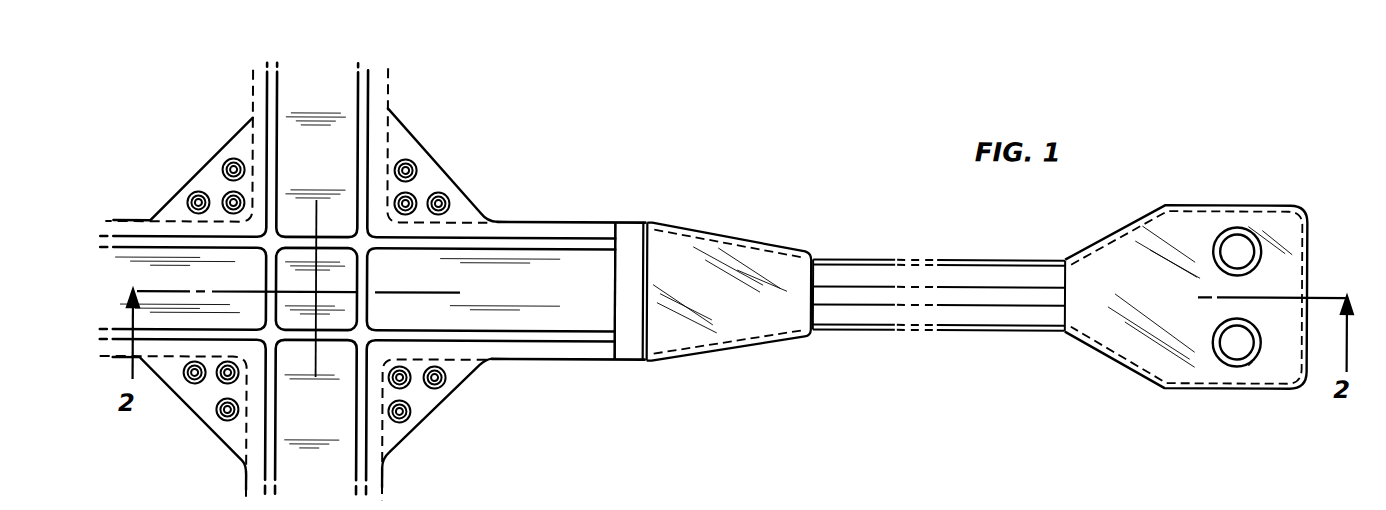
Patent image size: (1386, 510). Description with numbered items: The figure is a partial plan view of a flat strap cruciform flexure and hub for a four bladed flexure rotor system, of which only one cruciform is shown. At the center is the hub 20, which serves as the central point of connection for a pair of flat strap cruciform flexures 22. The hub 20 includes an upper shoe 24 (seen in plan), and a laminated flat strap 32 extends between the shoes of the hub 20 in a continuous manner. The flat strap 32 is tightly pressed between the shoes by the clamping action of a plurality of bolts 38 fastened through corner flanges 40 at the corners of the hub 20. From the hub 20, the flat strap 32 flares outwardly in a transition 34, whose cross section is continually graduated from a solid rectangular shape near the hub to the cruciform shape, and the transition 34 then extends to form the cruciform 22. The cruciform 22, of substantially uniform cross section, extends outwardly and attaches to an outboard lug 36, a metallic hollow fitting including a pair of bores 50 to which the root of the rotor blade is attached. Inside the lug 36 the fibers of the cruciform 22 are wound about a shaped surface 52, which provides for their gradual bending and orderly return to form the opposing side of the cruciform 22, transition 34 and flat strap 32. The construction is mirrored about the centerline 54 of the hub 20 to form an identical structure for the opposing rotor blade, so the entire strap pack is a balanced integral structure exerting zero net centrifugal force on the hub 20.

The hub 20 is at (516, 186).
The flat strap cruciform flexure 22 is at (912, 235).
The upper shoe 24 is at (540, 226).
The laminated flat strap 32 is at (634, 228).
The transition 34 is at (743, 255).
The outboard lug 36 is at (1278, 227).
The bolts 38 is at (226, 168).
The corner flanges 40 is at (457, 198).
The bores 50 is at (1237, 223).
The shaped surface 52 is at (1253, 358).
The centerline 54 is at (317, 291).